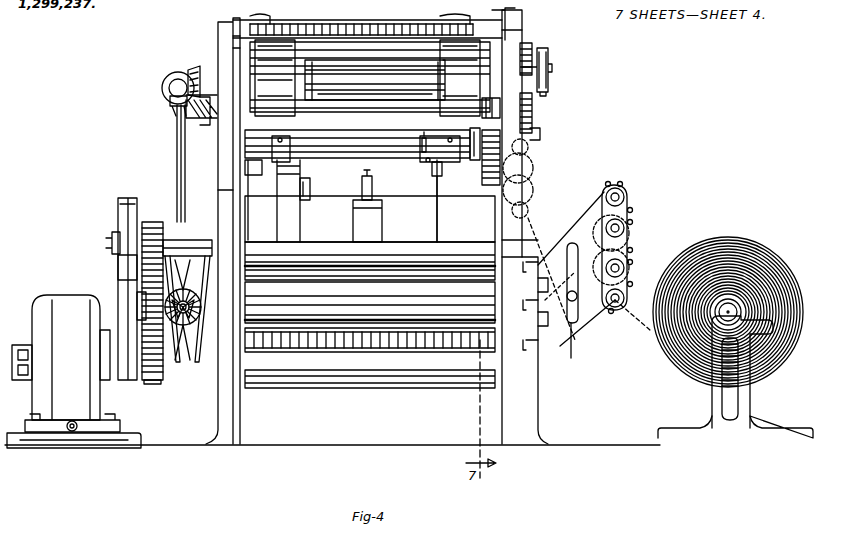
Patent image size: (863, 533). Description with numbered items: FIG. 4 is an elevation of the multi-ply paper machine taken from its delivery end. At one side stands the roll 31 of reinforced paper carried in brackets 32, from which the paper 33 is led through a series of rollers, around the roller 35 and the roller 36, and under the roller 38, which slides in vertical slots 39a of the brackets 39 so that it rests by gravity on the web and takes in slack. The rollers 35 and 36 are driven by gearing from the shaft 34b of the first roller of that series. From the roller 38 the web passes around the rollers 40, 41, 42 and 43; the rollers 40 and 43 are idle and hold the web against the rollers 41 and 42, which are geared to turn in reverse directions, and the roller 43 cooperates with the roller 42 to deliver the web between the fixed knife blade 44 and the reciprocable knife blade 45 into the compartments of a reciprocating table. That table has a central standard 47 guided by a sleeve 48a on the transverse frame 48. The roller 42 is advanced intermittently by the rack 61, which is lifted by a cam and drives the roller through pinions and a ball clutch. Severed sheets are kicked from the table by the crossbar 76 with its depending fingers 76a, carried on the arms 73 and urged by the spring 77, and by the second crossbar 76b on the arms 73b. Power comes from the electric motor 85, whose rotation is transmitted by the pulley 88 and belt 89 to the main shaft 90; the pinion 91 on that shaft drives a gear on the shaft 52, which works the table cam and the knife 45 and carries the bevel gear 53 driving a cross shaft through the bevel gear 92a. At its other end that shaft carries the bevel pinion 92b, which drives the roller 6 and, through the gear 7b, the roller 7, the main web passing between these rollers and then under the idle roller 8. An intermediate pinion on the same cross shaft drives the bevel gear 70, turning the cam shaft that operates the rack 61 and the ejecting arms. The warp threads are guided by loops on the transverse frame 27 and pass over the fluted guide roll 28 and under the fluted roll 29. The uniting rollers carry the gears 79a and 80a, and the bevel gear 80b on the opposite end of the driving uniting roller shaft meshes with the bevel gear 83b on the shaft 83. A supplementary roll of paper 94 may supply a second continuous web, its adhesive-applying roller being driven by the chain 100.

The roller 6 is at (370, 302).
The roller 7 is at (370, 261).
The gear 7b is at (210, 244).
The idle roller 8 is at (414, 388).
The transverse frame 27 is at (510, 28).
The fluted guide roll 28 is at (398, 22).
The fluted roll 29 is at (406, 352).
The roll of paper 31 is at (757, 248).
The brackets 32 is at (750, 396).
The paper 33 is at (634, 322).
The shaft 34b is at (608, 318).
The roller 35 is at (632, 262).
The roller 36 is at (631, 222).
The roller 38 is at (583, 341).
The brackets 39 is at (557, 325).
The vertical slots 39a is at (568, 250).
The roller 40 is at (529, 210).
The roller 41 is at (534, 184).
The roller 42 is at (534, 165).
The roller 43 is at (529, 148).
The fixed knife blade 44 is at (472, 134).
The reciprocable knife blade 45 is at (492, 150).
The reciprocating standard 47 is at (373, 198).
The transverse frame 48 is at (370, 219).
The sleeve 48a is at (352, 212).
The shaft 52 is at (136, 305).
The bevel gear 53 is at (180, 340).
The rack 61 is at (494, 112).
The bevel gear 70 is at (200, 340).
The arms 73 is at (276, 215).
The arms 73b is at (306, 203).
The crossbar 76 is at (352, 134).
The depending fingers 76a is at (426, 136).
The crossbar 76b is at (428, 176).
The spring 77 is at (262, 185).
The gear 79a is at (533, 112).
The gear 80a is at (534, 50).
The bevel gear 80b is at (195, 66).
The shaft 83 is at (176, 151).
The bevel gear 83b is at (163, 85).
The electric motor 85 is at (74, 371).
The pulley 88 is at (117, 215).
The belt 89 is at (126, 258).
The main shaft 90 is at (110, 240).
The pinion 91 is at (152, 222).
The bevel gear 92a is at (151, 384).
The bevel pinion 92b is at (185, 330).
The roll of paper 94 is at (370, 78).
The chain 100 is at (550, 54).